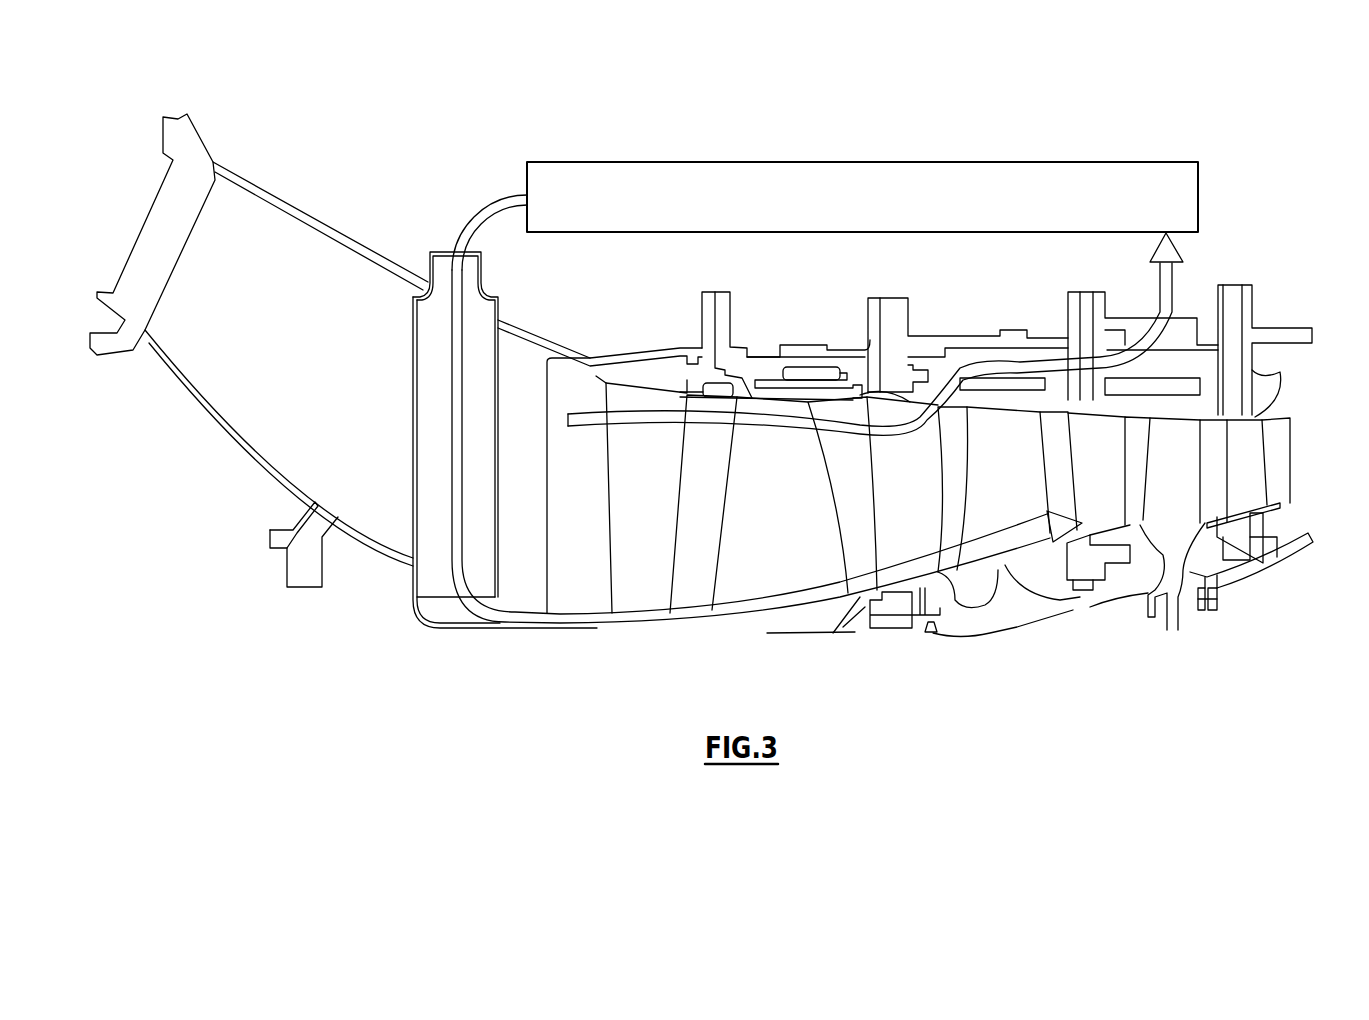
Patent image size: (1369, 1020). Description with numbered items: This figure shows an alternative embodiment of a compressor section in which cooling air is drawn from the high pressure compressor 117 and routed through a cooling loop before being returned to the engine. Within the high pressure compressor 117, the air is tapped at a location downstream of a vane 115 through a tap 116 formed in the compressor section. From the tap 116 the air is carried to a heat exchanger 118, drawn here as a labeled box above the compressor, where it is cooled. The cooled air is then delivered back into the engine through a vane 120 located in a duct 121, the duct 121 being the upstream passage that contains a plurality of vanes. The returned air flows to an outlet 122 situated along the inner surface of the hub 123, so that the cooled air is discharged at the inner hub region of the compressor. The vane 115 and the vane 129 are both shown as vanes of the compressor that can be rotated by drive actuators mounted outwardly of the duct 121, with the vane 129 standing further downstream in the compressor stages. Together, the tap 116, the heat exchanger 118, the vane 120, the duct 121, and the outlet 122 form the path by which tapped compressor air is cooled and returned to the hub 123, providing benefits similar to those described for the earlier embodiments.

The vane 115 is at (930, 491).
The tap 116 is at (948, 403).
The high pressure compressor 117 is at (996, 605).
The heat exchanger 118 is at (1083, 160).
The vane 120 is at (440, 478).
The duct 121 is at (232, 430).
The outlet 122 is at (597, 628).
The hub 123 is at (1010, 585).
The vane 129 is at (1118, 488).